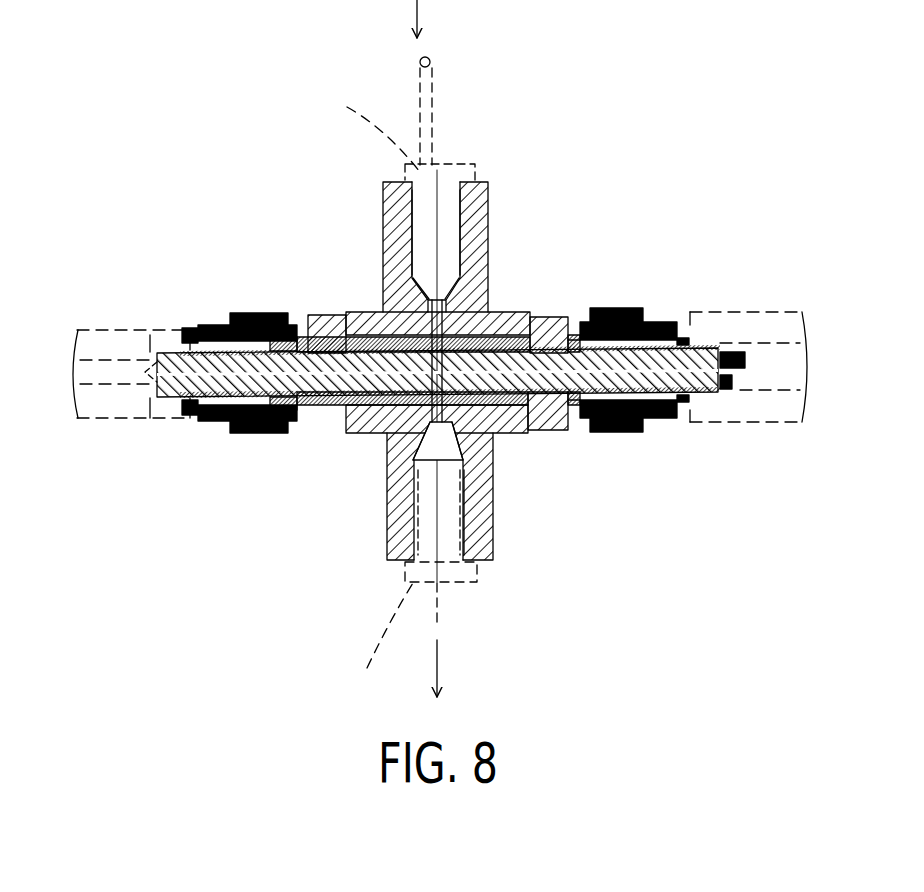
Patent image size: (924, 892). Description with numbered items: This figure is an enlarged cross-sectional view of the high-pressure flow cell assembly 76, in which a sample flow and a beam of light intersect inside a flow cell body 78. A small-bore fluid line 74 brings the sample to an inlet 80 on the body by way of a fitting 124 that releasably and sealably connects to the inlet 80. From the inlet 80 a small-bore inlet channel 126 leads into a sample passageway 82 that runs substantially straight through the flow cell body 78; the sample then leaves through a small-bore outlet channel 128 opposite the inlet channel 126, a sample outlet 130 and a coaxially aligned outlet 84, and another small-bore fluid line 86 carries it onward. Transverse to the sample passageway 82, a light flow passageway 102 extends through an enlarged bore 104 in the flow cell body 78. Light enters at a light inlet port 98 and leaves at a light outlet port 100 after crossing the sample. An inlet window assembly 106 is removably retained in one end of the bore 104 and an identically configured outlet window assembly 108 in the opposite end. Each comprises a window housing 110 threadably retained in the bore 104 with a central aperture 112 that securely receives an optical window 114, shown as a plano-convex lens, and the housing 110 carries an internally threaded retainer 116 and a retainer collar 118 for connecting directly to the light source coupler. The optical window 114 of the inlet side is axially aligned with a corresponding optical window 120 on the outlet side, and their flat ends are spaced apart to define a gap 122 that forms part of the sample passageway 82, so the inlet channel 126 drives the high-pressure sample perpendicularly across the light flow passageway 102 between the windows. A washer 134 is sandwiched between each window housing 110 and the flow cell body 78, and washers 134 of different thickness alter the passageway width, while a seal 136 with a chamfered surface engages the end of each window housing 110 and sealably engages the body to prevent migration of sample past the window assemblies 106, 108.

The small-bore fluid line 74 is at (437, 108).
The high-pressure flow cell assembly 76 is at (245, 177).
The flow cell body 78 is at (383, 292).
The inlet 80 is at (467, 228).
The sample passageway 82 is at (445, 222).
The outlet 84 is at (464, 512).
The small-bore fluid line 86 is at (443, 615).
The light inlet port 98 is at (808, 355).
The light outlet port 100 is at (147, 364).
The light flow passageway 102 is at (507, 293).
The enlarged bore 104 is at (378, 440).
The inlet window assembly 106 is at (620, 440).
The outlet window assembly 108 is at (234, 445).
The window housing 110 is at (340, 313).
The central aperture 112 is at (718, 348).
The optical window 114 is at (742, 346).
The retainer 116 is at (627, 308).
The retainer collar 118 is at (690, 322).
The optical window 120 is at (155, 352).
The gap 122 is at (418, 478).
The fitting 124 is at (347, 107).
The inlet channel 126 is at (375, 316).
The outlet channel 128 is at (447, 398).
The sample outlet 130 is at (478, 548).
The washer 134 is at (533, 338).
The seal 136 is at (468, 297).